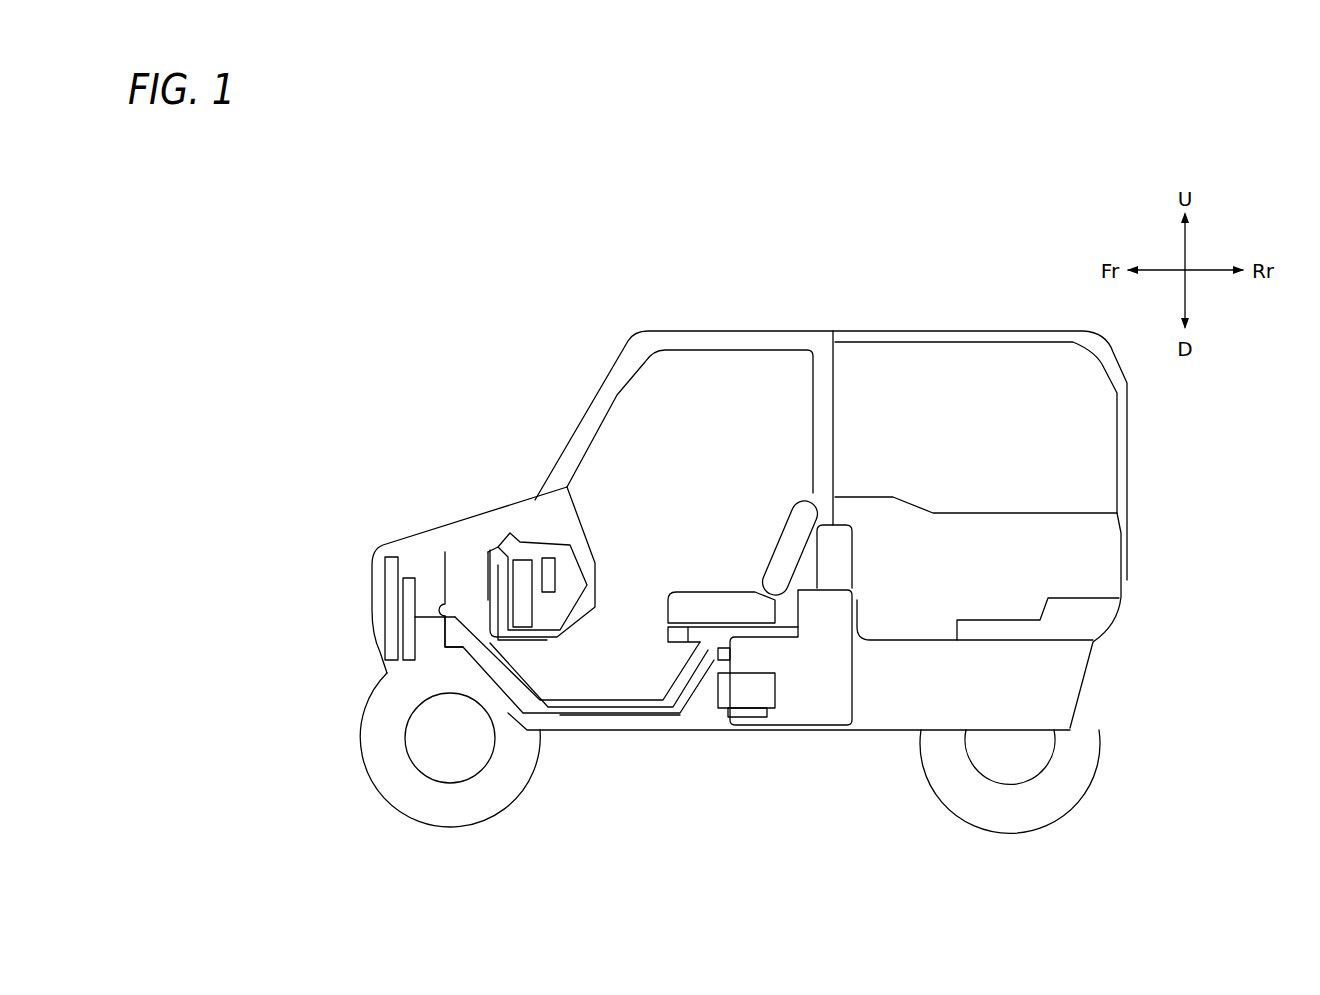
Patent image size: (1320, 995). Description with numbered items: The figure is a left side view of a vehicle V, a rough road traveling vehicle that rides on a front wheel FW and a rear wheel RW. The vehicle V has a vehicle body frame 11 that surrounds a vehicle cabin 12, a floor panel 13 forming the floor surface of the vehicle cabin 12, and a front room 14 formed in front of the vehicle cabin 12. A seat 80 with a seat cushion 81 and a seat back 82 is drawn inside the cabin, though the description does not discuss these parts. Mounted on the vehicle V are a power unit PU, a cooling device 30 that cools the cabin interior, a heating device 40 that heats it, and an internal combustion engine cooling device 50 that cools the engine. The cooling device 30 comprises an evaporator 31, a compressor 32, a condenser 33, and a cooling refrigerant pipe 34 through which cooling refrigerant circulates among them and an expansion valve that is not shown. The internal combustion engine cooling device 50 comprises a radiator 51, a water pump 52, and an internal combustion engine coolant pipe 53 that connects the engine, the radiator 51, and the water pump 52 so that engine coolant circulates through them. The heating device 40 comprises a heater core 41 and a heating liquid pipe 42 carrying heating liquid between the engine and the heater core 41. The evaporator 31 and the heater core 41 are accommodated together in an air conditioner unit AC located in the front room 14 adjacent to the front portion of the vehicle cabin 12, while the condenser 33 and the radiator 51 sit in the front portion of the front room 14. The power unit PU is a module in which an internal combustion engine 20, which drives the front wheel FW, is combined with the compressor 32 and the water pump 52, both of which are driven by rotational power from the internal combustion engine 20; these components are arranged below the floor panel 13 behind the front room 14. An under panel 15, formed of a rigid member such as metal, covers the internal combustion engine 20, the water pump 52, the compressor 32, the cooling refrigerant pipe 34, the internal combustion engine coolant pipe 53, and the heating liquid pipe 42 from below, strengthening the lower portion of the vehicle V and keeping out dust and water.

The vehicle V is at (402, 317).
The vehicle body frame 11 is at (797, 342).
The vehicle cabin 12 is at (713, 363).
The floor panel 13 is at (647, 698).
The front room 14 is at (460, 533).
The under panel 15 is at (893, 730).
The internal combustion engine 20 is at (833, 713).
The power unit PU is at (858, 689).
The cooling device 30 is at (542, 678).
The evaporator 31 is at (522, 620).
The compressor 32 is at (752, 702).
The condenser 33 is at (387, 588).
The cooling refrigerant pipe 34 is at (540, 733).
The heating device 40 is at (506, 529).
The heater core 41 is at (557, 572).
The heating liquid pipe 42 is at (487, 583).
The air conditioner unit AC is at (535, 530).
The internal combustion engine cooling device 50 is at (519, 693).
The radiator 51 is at (407, 660).
The water pump 52 is at (720, 660).
The internal combustion engine coolant pipe 53 is at (682, 712).
The seat 80 is at (747, 568).
The seat cushion 81 is at (695, 603).
The seat back 82 is at (797, 533).
The front wheel FW is at (380, 777).
The rear wheel RW is at (1073, 780).